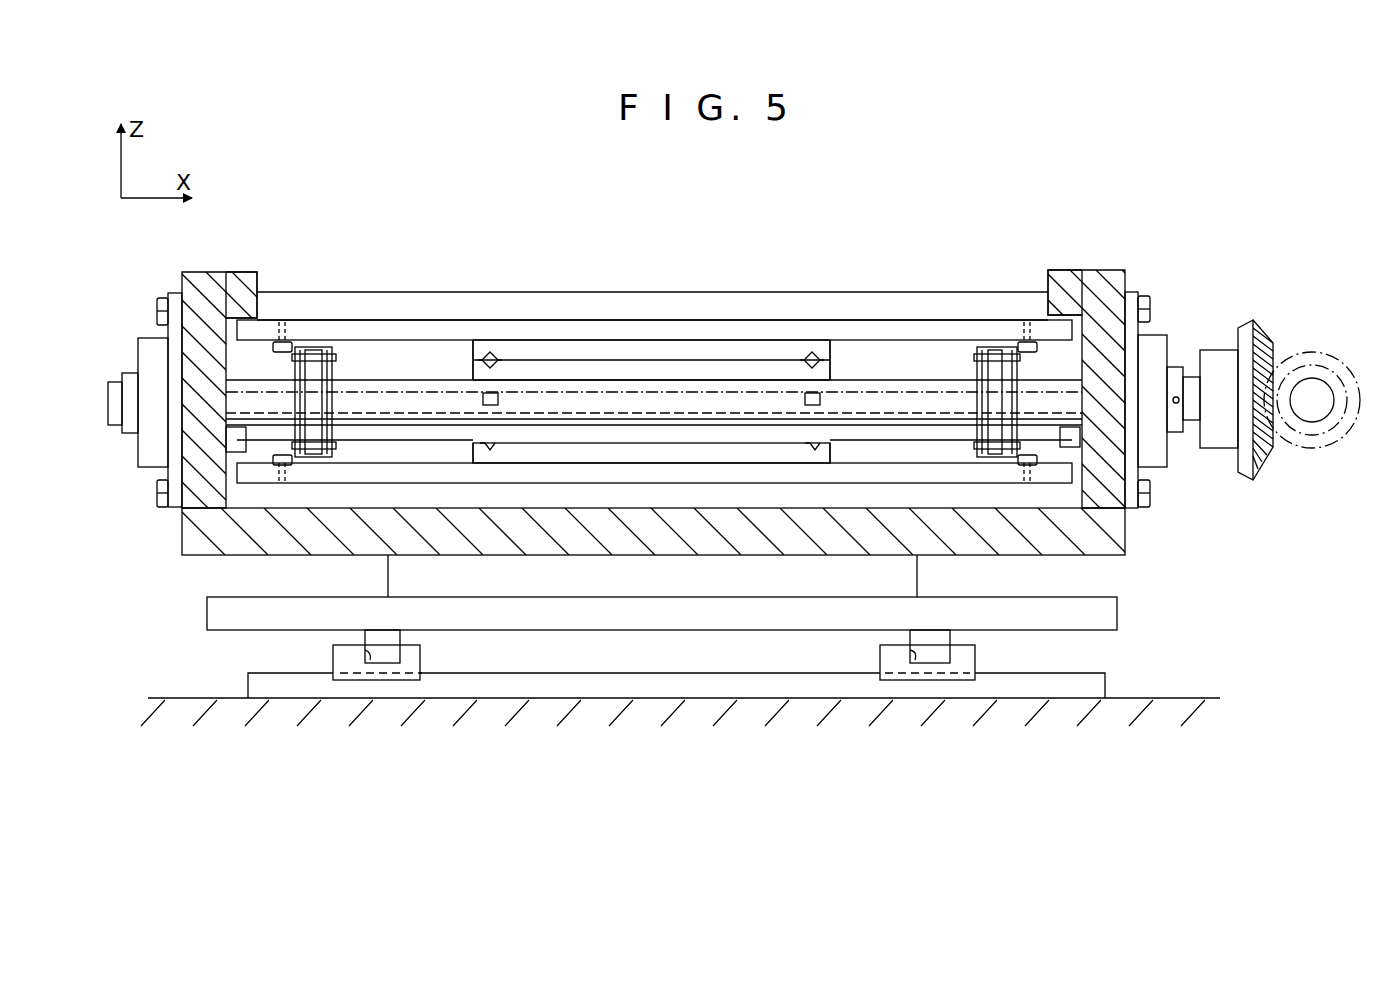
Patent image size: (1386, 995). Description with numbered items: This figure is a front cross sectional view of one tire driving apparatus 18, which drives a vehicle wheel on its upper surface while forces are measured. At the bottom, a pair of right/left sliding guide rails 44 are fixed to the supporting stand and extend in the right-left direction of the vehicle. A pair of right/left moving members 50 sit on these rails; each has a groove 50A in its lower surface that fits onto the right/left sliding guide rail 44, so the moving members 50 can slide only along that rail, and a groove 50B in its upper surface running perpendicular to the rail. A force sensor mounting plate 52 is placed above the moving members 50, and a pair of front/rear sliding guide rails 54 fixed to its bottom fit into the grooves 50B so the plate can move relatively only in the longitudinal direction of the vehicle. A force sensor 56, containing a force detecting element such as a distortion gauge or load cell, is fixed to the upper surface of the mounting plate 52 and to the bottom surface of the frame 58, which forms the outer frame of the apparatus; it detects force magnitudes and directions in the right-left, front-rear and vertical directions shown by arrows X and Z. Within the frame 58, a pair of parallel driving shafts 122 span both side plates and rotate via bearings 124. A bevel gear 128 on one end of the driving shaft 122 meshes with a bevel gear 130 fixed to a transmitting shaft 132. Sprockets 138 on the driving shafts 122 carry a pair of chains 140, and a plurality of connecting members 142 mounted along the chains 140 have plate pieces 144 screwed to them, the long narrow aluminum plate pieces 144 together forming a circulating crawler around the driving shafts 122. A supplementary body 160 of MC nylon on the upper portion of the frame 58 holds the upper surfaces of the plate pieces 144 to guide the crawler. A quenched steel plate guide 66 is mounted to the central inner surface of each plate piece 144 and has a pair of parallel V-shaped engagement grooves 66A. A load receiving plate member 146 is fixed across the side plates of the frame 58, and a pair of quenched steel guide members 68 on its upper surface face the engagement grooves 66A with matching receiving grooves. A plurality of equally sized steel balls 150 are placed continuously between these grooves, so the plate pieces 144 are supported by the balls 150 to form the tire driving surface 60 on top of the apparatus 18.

The tire driving apparatus 18 is at (1143, 262).
The right/left sliding guide rail 44 is at (1105, 682).
The right/left moving member 50 is at (345, 672).
The groove 50A is at (430, 677).
The groove 50B is at (372, 657).
The force sensor mounting plate 52 is at (1117, 618).
The front/rear sliding guide rail 54 is at (387, 652).
The force sensor 56 is at (917, 580).
The frame 58 is at (1125, 542).
The tire driving surface 60 is at (790, 290).
The plate guide 66 is at (693, 350).
The engagement groove 66A is at (473, 365).
The guide member 68 is at (560, 340).
The driving shaft 122 is at (883, 426).
The bearing 124 is at (150, 472).
The bevel gear 128 is at (1256, 328).
The bevel gear 130 is at (1290, 352).
The transmitting shaft 132 is at (1278, 445).
The sprocket 138 is at (330, 435).
The chain 140 is at (332, 350).
The connecting member 142 is at (262, 345).
The plate piece 144 is at (573, 328).
The load receiving plate member 146 is at (440, 430).
The ball 150 is at (490, 352).
The supplementary body 160 is at (200, 272).